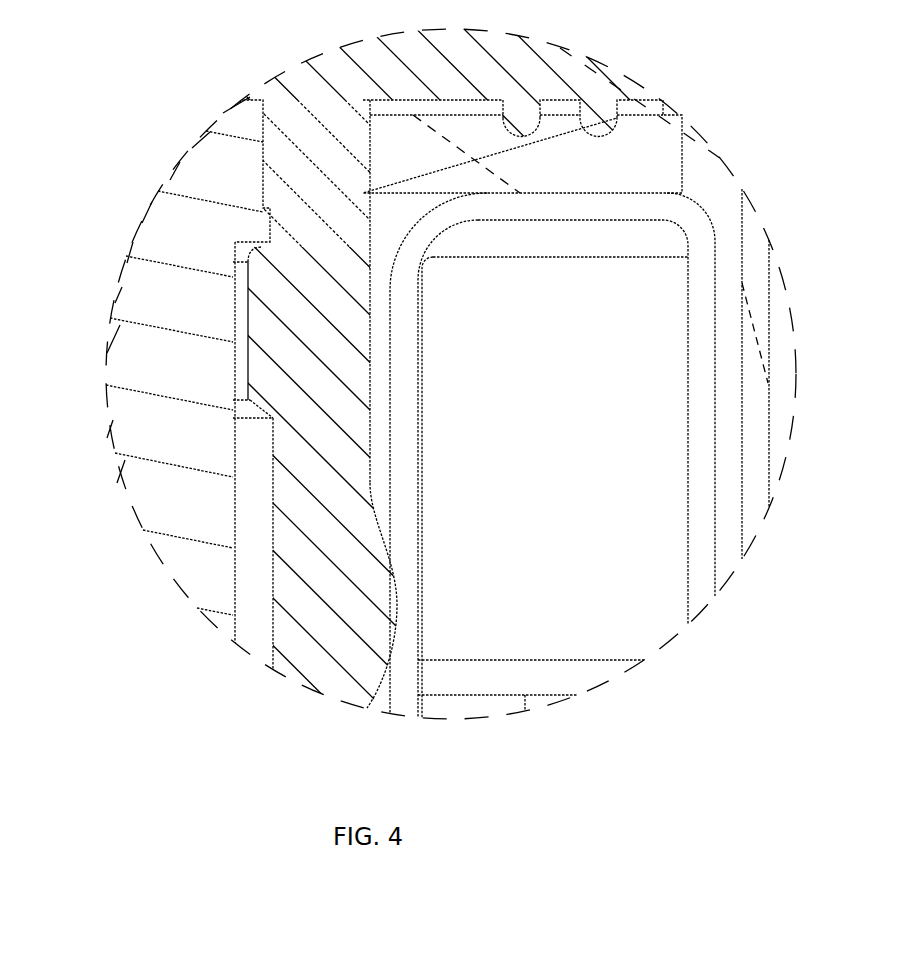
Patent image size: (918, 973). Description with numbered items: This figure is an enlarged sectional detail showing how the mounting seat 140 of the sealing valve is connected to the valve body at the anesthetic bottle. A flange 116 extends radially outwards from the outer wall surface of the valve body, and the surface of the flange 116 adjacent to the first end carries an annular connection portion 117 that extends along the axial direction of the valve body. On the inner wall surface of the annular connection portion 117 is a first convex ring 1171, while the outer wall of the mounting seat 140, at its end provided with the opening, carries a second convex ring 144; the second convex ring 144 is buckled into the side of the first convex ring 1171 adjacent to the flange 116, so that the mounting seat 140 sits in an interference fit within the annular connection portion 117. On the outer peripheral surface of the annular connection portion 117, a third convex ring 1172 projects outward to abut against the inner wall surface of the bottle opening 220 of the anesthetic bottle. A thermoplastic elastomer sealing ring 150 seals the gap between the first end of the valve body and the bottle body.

The flange 116 is at (592, 83).
The annular connection portion 117 is at (297, 474).
The first convex ring 1171 is at (270, 375).
The third convex ring 1172 is at (382, 550).
The mounting seat 140 is at (193, 243).
The second convex ring 144 is at (258, 190).
The thermoplastic elastomer sealing ring 150 is at (620, 140).
The bottle opening 220 is at (382, 230).